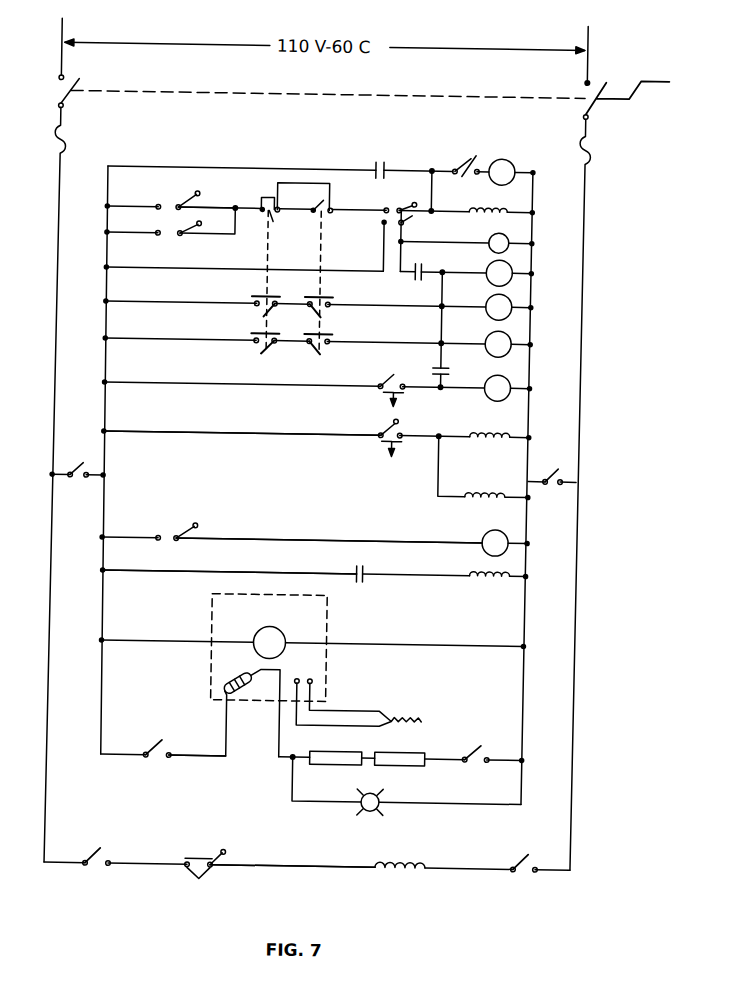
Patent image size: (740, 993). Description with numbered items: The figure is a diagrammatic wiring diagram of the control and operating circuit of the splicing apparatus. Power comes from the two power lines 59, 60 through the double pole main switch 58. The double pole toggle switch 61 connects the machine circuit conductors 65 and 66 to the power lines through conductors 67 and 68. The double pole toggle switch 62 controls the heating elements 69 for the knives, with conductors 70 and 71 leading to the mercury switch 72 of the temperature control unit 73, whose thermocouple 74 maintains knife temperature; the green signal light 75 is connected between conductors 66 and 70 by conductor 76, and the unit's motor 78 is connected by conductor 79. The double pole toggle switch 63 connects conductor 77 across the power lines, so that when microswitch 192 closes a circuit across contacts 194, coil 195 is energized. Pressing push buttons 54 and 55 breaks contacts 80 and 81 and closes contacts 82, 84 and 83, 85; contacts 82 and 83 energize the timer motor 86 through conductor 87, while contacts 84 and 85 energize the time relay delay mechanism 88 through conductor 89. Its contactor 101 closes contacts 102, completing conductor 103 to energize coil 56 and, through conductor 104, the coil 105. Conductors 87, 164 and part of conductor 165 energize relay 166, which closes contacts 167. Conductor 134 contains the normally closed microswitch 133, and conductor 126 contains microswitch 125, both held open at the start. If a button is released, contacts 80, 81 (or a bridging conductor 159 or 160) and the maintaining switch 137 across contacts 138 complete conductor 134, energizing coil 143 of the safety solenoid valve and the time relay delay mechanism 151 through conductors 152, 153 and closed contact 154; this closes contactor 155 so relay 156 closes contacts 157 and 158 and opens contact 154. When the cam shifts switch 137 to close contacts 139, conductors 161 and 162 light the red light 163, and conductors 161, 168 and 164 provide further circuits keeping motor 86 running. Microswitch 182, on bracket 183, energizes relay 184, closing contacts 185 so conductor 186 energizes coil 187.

The power line 59 is at (58, 61).
The power line 60 is at (587, 64).
The double pole main switch 58 is at (437, 99).
The contact 158 is at (380, 164).
The conductor 153 is at (426, 167).
The contact 154 is at (459, 162).
The time relay delay mechanism 151 is at (513, 163).
The conductor 152 is at (434, 186).
The microswitch 133 is at (164, 206).
The conductor 134 is at (220, 207).
The push button 54 is at (267, 198).
The bridging conductor 159 is at (289, 197).
The bridging conductor 160 is at (318, 183).
The contacts 80 is at (270, 214).
The contacts 81 is at (329, 212).
The push button 55 is at (331, 203).
The contacts 138 is at (387, 206).
The coil 143 is at (508, 209).
The contacts 139 is at (385, 224).
The maintaining switch 137 is at (408, 222).
The microswitch 125 is at (171, 239).
The conductor 126 is at (236, 240).
The red light 163 is at (511, 241).
The conductor 162 is at (450, 243).
The conductor 161 is at (292, 272).
The contacts 167 is at (427, 270).
The relay 166 is at (516, 272).
The conductor 165 is at (445, 274).
The conductor 164 is at (444, 328).
The contact 157 is at (447, 369).
The contacts 82 is at (253, 312).
The contacts 83 is at (328, 312).
The conductor 87 is at (404, 305).
The timer motor 86 is at (516, 305).
The contacts 84 is at (253, 349).
The contacts 85 is at (311, 352).
The conductor 89 is at (370, 345).
The time relay delay mechanism 88 is at (516, 341).
The contactor 155 is at (395, 380).
The relay 156 is at (516, 385).
The conductor 168 is at (241, 387).
The conductor 103 is at (290, 435).
The contacts 102 is at (397, 432).
The contactor 101 is at (388, 446).
The coil 56 is at (521, 428).
The conductor 104 is at (443, 467).
The coil 105 is at (475, 479).
The conductor 68 is at (581, 481).
The double pole toggle switch 61 is at (556, 466).
The conductor 67 is at (60, 482).
The conductor 65 is at (109, 515).
The microswitch 182 is at (182, 530).
The bracket 183 is at (313, 540).
The relay 184 is at (490, 529).
The conductor 66 is at (534, 540).
The contacts 185 is at (371, 566).
The conductor 186 is at (267, 573).
The coil 187 is at (495, 580).
The conductor 79 is at (176, 639).
The motor 78 is at (283, 628).
The temperature control unit 73 is at (339, 616).
The mercury switch 72 is at (249, 679).
The thermocouple 74 is at (389, 711).
The double pole toggle switch 62 is at (157, 739).
The conductor 70 is at (211, 759).
The heating elements 69 is at (392, 750).
The conductor 71 is at (438, 761).
The conductor 76 is at (432, 804).
The green signal light 75 is at (371, 809).
The double pole toggle switch 63 is at (108, 851).
The contacts 194 is at (210, 881).
The microswitch 192 is at (234, 836).
The conductor 77 is at (337, 867).
The coil 195 is at (407, 872).